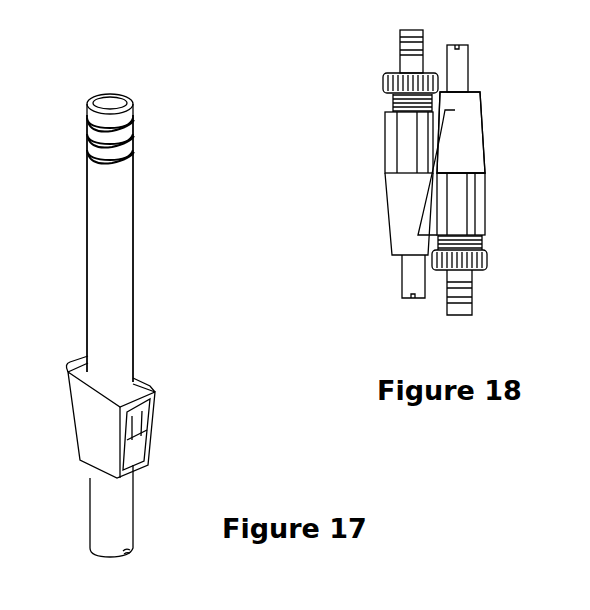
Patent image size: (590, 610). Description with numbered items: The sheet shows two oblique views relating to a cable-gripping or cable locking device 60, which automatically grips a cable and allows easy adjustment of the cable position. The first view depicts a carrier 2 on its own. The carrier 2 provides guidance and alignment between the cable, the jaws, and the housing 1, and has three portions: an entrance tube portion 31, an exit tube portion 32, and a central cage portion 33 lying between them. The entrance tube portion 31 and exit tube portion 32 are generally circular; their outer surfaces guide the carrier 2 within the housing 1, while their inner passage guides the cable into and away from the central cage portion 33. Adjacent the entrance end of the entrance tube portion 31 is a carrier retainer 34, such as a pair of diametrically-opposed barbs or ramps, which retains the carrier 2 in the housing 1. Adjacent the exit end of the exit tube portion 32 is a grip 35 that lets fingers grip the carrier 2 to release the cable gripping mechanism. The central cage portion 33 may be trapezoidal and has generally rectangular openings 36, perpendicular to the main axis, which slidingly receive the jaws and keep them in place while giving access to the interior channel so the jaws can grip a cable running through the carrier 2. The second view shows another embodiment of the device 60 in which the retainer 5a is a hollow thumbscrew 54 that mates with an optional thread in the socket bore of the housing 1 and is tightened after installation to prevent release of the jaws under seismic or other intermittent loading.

In FIG. 18, the housing 1 is at (393, 229).
In FIG. 17, the carrier 2 is at (90, 81).
In FIG. 18, the carrier 2 is at (402, 277).
In FIG. 18, the retainer 5a is at (371, 75).
In FIG. 17, the entrance tube portion 31 is at (112, 512).
In FIG. 17, the exit tube portion 32 is at (120, 244).
In FIG. 17, the central cage portion 33 is at (95, 423).
In FIG. 17, the carrier retainer 34 is at (131, 553).
In FIG. 17, the grip 35 is at (133, 134).
In FIG. 17, the openings 36 is at (138, 435).
In FIG. 18, the hollow thumbscrew 54 is at (395, 99).
In FIG. 18, the cable locking device 60 is at (501, 167).